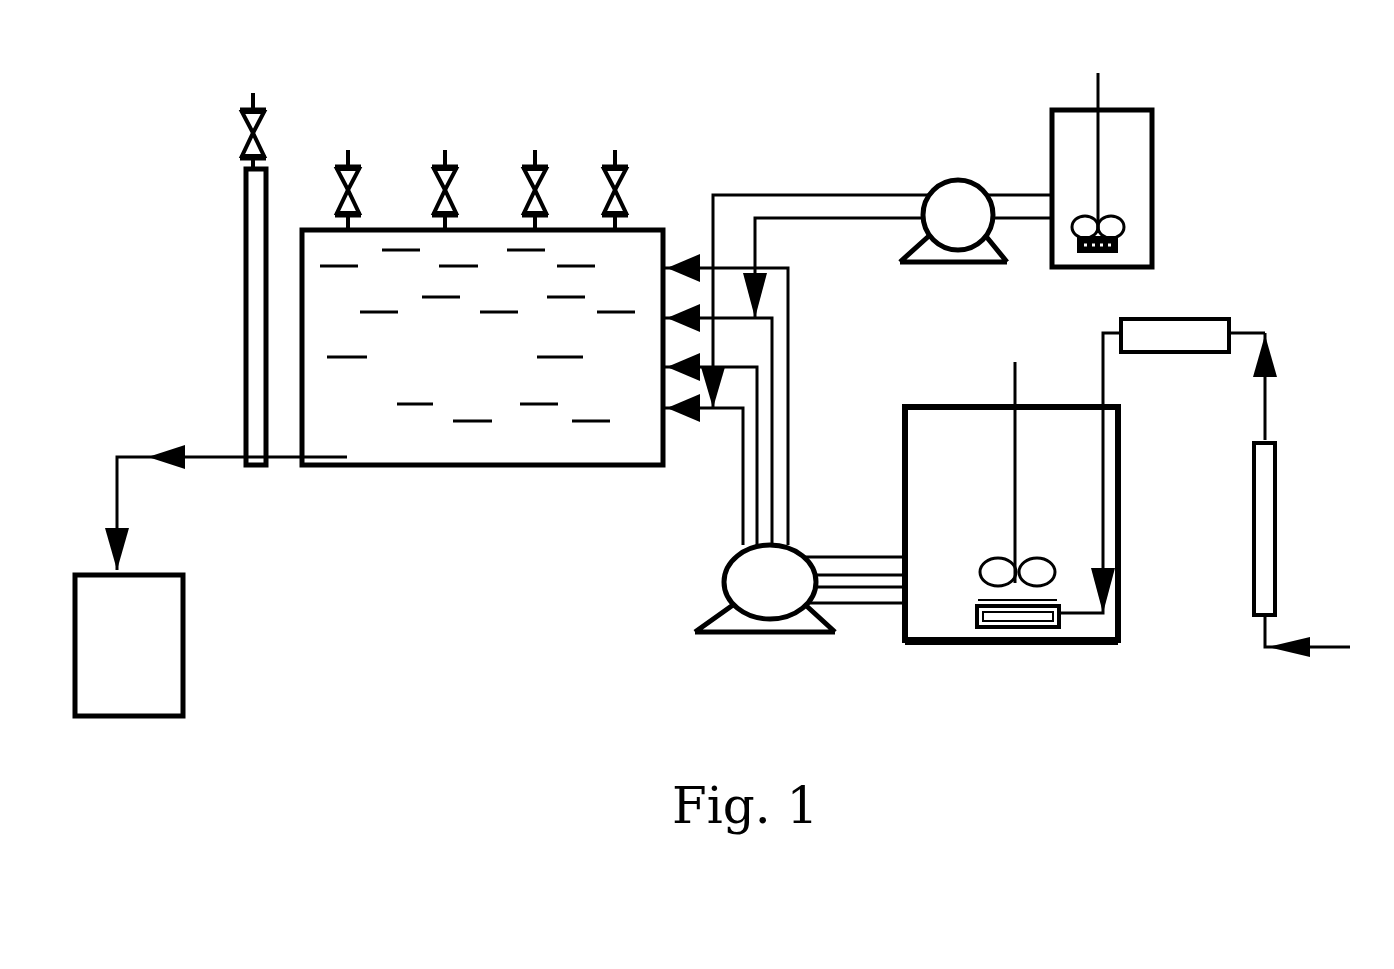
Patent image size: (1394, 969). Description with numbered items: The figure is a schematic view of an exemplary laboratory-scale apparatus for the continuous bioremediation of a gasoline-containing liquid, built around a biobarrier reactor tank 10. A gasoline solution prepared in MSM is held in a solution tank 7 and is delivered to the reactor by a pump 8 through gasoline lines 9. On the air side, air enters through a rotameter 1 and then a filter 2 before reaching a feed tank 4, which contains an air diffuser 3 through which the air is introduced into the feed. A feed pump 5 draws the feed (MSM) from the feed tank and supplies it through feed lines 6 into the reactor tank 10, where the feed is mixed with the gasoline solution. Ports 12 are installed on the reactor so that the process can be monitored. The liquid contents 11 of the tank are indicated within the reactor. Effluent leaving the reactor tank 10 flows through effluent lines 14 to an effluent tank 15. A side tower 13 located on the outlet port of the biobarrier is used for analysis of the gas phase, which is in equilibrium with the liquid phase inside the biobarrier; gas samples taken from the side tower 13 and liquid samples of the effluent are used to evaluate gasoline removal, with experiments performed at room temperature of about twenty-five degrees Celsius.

The rotameter 1 is at (1252, 490).
The filter 2 is at (1160, 318).
The air diffuser 3 is at (1013, 645).
The feed tank 4 is at (975, 404).
The feed pump 5 is at (722, 573).
The feed lines 6 is at (743, 530).
The solution tank 7 is at (1152, 185).
The pump 8 is at (958, 180).
The gasoline lines 9 is at (836, 195).
The tank 10 is at (495, 470).
The liquid 11 is at (460, 377).
The ports 12 is at (360, 168).
The side tower 13 is at (243, 245).
The effluent lines 14 is at (213, 457).
The effluent tank 15 is at (185, 625).